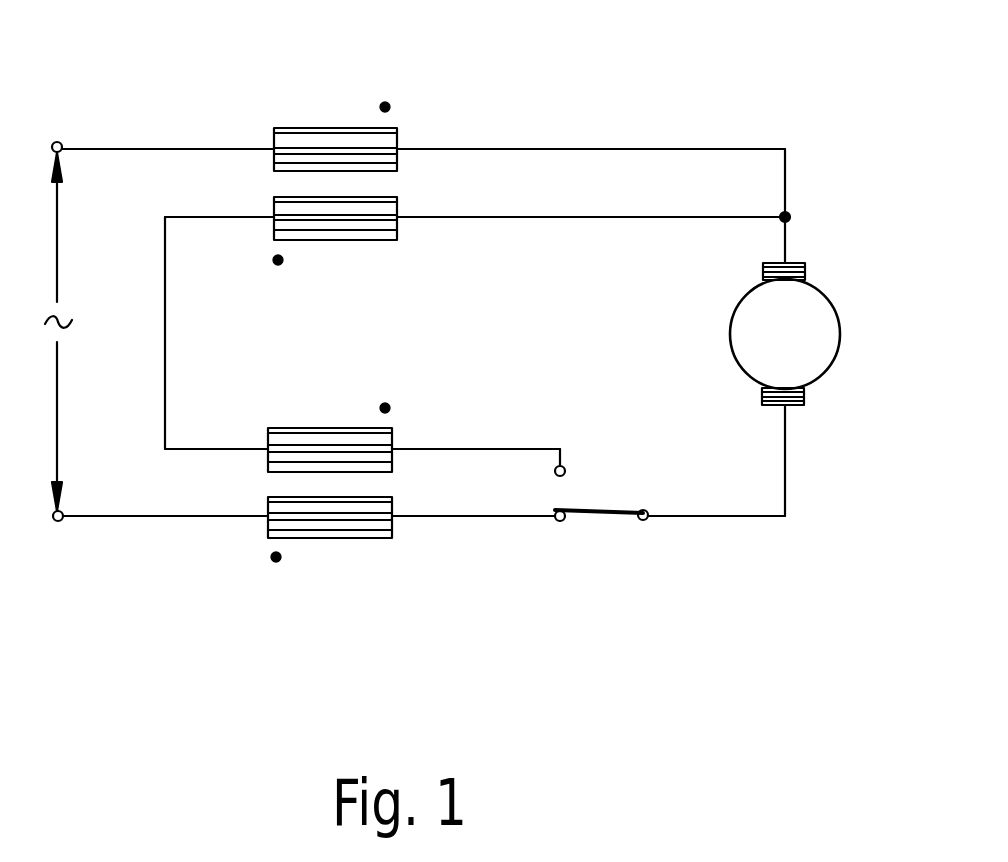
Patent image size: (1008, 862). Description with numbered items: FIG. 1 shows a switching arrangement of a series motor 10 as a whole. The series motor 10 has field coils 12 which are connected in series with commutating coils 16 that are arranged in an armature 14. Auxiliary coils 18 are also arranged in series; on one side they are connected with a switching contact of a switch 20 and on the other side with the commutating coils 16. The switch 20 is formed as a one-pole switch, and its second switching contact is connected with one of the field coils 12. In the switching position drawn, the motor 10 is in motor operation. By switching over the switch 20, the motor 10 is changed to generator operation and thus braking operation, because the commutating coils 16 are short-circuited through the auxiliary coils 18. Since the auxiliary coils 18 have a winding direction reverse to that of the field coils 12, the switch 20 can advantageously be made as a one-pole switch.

The series motor 10 is at (817, 347).
The field coils 12 is at (310, 128).
The armature 14 is at (833, 305).
The commutating coils 16 is at (803, 265).
The auxiliary coils 18 is at (333, 240).
The switch 20 is at (605, 520).